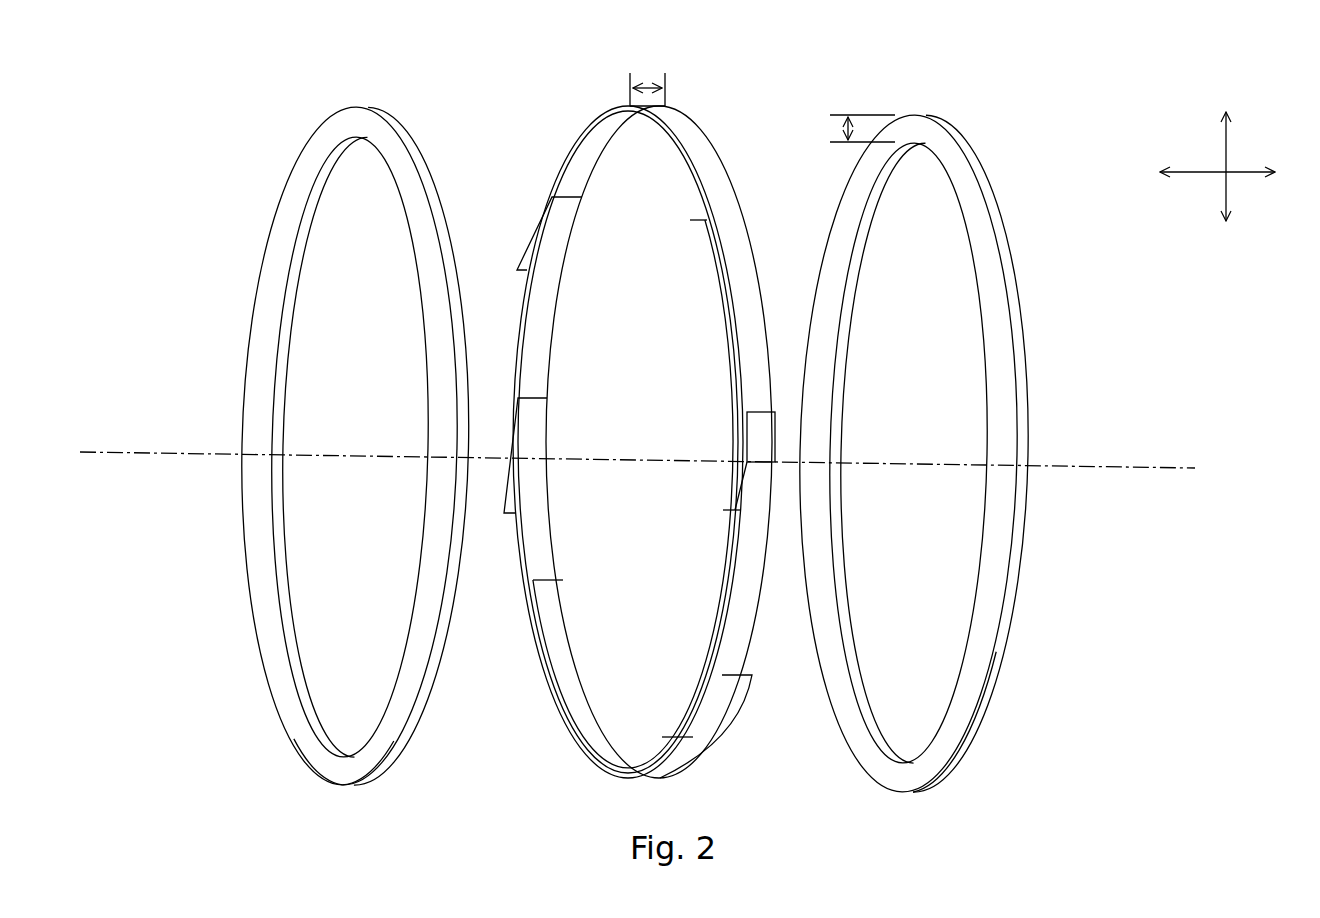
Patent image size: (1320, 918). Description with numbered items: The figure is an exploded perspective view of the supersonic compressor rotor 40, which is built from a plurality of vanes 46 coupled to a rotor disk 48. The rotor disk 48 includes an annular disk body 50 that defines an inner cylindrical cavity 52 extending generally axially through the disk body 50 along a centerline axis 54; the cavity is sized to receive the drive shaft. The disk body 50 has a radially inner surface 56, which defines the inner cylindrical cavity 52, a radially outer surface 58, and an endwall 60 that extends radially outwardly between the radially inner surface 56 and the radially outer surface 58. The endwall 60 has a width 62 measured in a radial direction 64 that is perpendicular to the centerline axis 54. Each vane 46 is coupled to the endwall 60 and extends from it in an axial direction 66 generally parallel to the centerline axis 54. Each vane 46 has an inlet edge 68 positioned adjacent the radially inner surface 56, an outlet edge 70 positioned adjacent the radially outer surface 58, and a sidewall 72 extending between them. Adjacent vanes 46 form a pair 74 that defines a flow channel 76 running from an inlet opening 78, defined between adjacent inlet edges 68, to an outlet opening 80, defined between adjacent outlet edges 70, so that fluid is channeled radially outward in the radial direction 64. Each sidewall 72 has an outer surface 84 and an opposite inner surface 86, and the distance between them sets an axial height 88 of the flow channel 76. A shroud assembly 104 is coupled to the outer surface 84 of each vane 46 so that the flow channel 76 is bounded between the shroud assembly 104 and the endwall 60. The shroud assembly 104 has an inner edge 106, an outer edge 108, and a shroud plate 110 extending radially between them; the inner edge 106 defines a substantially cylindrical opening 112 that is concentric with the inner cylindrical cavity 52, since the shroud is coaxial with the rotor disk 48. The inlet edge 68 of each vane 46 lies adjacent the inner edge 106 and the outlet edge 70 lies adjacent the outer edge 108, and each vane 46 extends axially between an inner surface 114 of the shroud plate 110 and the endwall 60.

The supersonic compressor rotor 40 is at (1067, 54).
The vane 46 is at (718, 186).
The rotor disk 48 is at (1039, 263).
The annular disk body 50 is at (1050, 326).
The inner cylindrical cavity 52 is at (888, 709).
The centerline axis 54 is at (1118, 468).
The radially inner surface 56 is at (848, 580).
The radially outer surface 58 is at (1018, 598).
The endwall 60 is at (955, 682).
The width 62 is at (845, 128).
The radial direction 64 is at (1226, 142).
The axial direction 66 is at (1248, 172).
The inlet edge 68 is at (692, 222).
The outlet edge 70 is at (668, 100).
The sidewall 72 is at (737, 293).
The pair of vanes 74 is at (729, 106).
The flow channel 76 is at (695, 203).
The inlet opening 78 is at (693, 227).
The outlet opening 80 is at (626, 105).
The outer surface 84 is at (520, 308).
The inner surface 86 is at (742, 300).
The axial height 88 is at (645, 85).
The shroud assembly 104 is at (430, 66).
The inner edge 106 is at (277, 398).
The outer edge 108 is at (482, 292).
The shroud plate 110 is at (440, 352).
The opening 112 is at (318, 630).
The inner surface 114 is at (338, 690).